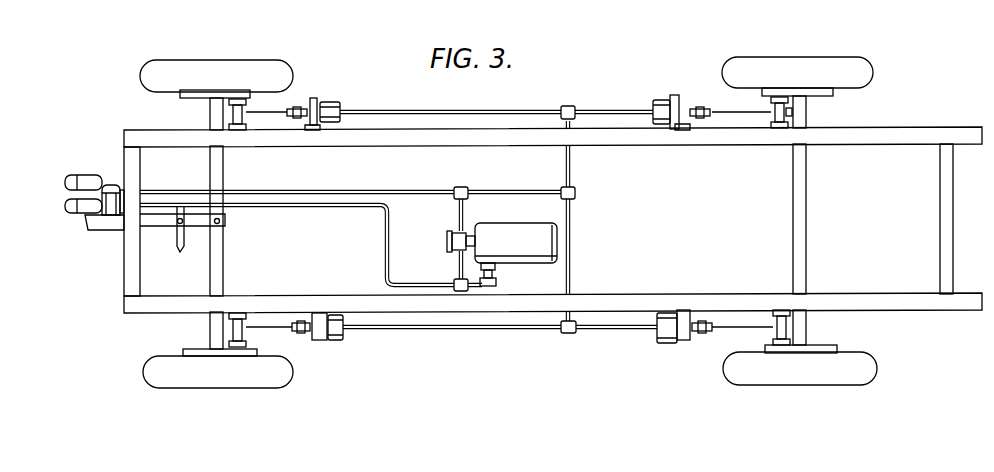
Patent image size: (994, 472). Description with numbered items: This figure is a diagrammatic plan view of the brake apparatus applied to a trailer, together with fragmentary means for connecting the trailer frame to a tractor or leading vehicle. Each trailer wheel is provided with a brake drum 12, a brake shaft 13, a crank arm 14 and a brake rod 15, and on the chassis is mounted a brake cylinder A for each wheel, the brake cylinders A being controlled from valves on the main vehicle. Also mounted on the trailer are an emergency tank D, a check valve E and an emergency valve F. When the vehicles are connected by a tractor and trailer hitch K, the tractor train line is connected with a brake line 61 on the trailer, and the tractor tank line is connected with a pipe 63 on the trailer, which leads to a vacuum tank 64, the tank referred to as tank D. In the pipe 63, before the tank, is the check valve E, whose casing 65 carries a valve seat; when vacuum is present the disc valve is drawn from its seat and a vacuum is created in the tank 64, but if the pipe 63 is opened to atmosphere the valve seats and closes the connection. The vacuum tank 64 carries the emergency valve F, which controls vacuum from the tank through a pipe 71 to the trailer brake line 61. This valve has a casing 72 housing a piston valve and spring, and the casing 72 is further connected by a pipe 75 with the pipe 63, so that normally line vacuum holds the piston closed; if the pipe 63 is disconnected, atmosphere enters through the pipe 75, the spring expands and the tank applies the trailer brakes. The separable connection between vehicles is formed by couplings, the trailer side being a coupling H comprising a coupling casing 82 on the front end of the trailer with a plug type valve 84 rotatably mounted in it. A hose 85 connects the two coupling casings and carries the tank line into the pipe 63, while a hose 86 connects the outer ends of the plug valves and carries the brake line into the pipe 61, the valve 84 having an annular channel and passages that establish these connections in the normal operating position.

The brake drum 12 is at (228, 92).
The brake shaft 13 is at (781, 126).
The crank arm 14 is at (777, 116).
The brake rod 15 is at (745, 114).
The brake line 61 is at (265, 191).
The pipe 63 is at (265, 207).
The vacuum tank 64 is at (548, 249).
The casing 65 is at (486, 287).
The pipe 71 is at (464, 212).
The casing 72 is at (448, 249).
The pipe 75 is at (459, 268).
The coupling casing 82 is at (86, 217).
The plug type valve 84 is at (112, 184).
The hose 85 is at (65, 205).
The hose 86 is at (75, 175).
The brake cylinder A is at (346, 82).
The emergency tank D is at (546, 246).
The check valve E is at (495, 284).
The emergency valve F is at (449, 240).
The coupling H is at (104, 190).
The tractor and trailer hitch K is at (106, 236).